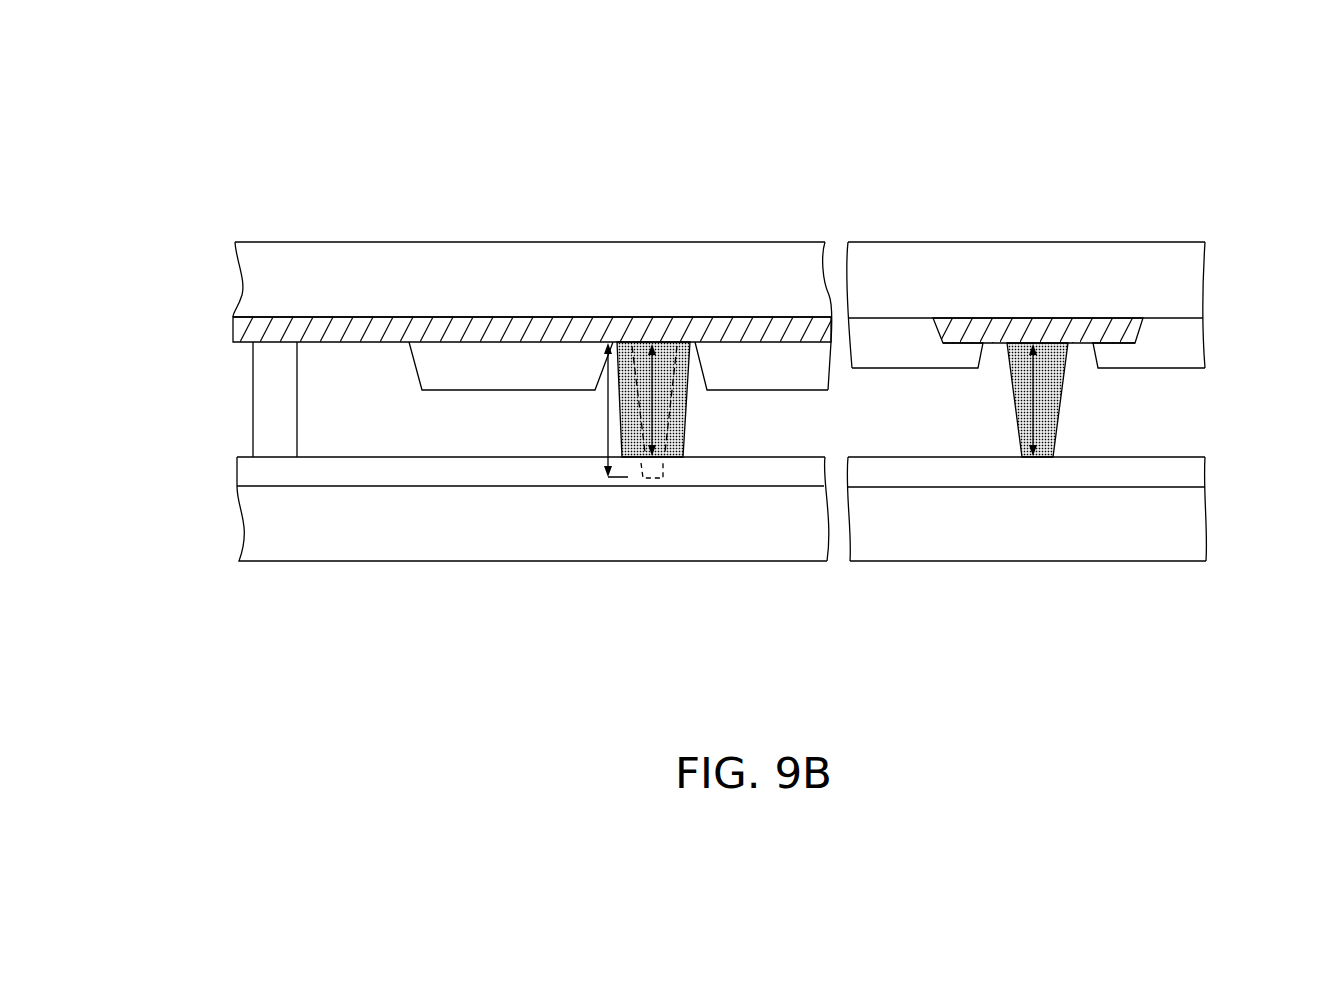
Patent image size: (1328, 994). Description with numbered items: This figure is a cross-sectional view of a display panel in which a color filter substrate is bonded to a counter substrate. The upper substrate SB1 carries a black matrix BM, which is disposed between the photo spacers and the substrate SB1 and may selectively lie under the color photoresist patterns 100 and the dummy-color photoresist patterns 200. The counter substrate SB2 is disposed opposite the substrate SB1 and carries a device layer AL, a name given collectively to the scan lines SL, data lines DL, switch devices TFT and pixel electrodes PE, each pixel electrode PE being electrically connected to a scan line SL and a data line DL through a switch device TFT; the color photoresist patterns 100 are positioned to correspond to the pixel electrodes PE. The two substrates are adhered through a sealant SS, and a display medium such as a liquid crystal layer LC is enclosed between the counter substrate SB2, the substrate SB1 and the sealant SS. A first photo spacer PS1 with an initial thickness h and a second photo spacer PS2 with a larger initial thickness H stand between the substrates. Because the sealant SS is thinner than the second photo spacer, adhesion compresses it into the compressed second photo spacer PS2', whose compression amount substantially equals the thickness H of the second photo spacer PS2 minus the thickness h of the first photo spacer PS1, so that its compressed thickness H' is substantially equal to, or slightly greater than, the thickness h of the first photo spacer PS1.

The substrate SB1 is at (243, 281).
The black matrix BM is at (246, 326).
The sealant SS is at (259, 395).
The device layer AL is at (241, 466).
The counter substrate SB2 is at (248, 522).
The dummy-color photoresist pattern 200 is at (550, 375).
The color photoresist pattern 100 is at (952, 362).
The first photo spacer PS1 is at (1061, 425).
The second photo spacer PS2 is at (653, 482).
The compressed second photo spacer PS2' is at (700, 484).
The liquid crystal layer LC is at (410, 442).
The initial thickness H is at (606, 410).
The thickness of the compressed second photo spacer H' is at (661, 400).
The initial thickness h is at (1042, 400).
The scan line SL is at (1301, 636).
The data line DL is at (1301, 671).
The pixel electrode PE is at (1301, 703).
The switch device TFT is at (1306, 734).